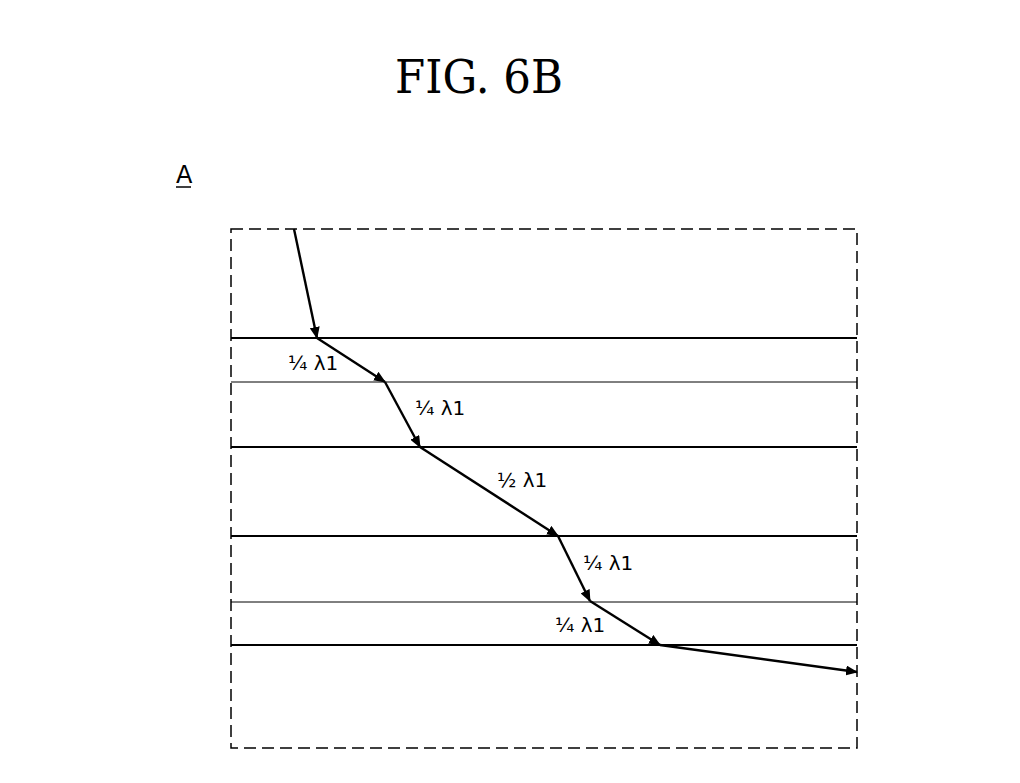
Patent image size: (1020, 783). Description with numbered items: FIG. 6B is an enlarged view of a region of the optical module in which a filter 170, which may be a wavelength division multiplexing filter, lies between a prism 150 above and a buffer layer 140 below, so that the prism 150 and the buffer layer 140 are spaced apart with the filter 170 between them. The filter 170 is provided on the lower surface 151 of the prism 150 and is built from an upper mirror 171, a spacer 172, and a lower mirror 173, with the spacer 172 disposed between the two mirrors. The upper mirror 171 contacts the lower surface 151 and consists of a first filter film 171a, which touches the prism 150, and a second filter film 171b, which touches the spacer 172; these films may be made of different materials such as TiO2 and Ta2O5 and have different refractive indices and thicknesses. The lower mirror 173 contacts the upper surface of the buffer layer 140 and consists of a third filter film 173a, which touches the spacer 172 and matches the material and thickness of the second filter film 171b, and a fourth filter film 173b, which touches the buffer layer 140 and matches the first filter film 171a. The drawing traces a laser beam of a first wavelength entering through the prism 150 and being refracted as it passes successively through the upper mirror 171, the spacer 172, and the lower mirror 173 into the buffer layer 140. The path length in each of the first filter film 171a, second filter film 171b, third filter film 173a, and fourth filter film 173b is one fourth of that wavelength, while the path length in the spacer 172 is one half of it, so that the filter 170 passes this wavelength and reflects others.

The buffer layer 140 is at (241, 696).
The prism 150 is at (241, 283).
The lower surface of the prism 151 is at (819, 338).
The filter 170 is at (72, 378).
The upper mirror 171 is at (135, 350).
The first filter film 171a is at (241, 359).
The second filter film 171b is at (241, 412).
The spacer 172 is at (241, 490).
The lower mirror 173 is at (135, 558).
The third filter film 173a is at (241, 569).
The fourth filter film 173b is at (241, 624).